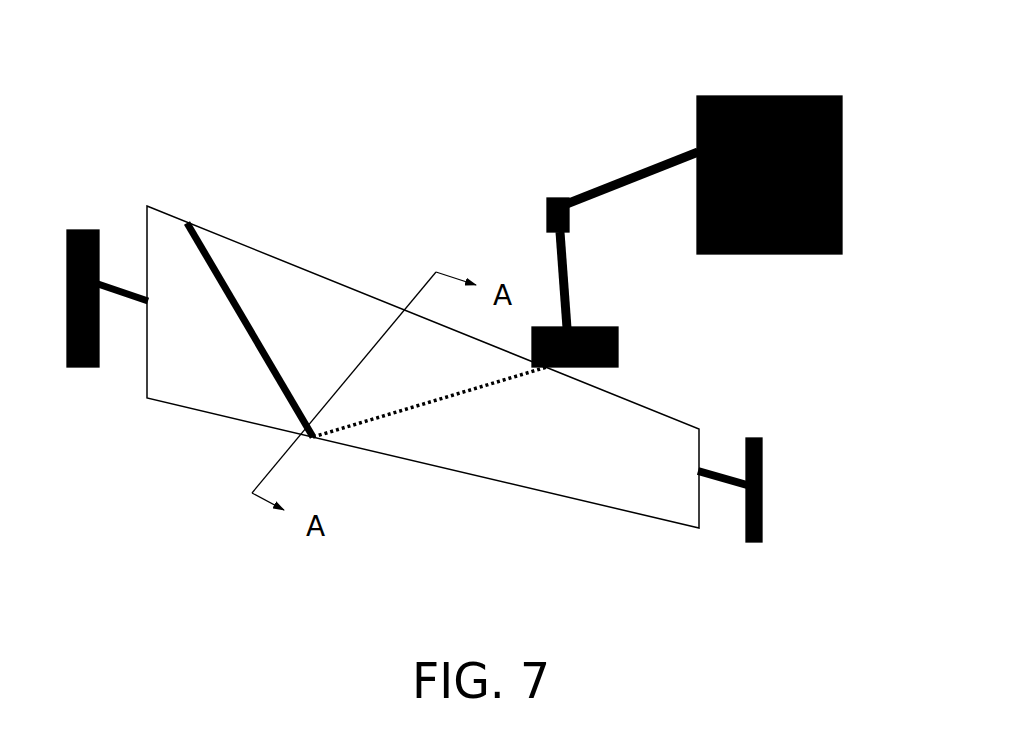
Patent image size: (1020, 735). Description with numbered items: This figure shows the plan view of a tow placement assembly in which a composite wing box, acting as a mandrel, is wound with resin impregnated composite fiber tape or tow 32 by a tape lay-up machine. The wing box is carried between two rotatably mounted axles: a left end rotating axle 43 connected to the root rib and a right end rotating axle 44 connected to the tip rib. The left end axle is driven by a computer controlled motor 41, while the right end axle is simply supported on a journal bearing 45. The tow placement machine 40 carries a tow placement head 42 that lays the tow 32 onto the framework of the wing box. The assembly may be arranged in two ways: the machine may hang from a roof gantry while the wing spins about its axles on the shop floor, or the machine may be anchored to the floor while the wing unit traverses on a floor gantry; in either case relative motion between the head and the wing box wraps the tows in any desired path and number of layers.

The resin impregnated composite fiber tape or tow 32 is at (235, 295).
The tow placement machine 40 is at (802, 87).
The computer controlled motor 41 is at (83, 222).
The tow placement head 42 is at (624, 336).
The left end rotating axle 43 is at (135, 308).
The right end rotating axle 44 is at (719, 487).
The journal bearing 45 is at (768, 487).